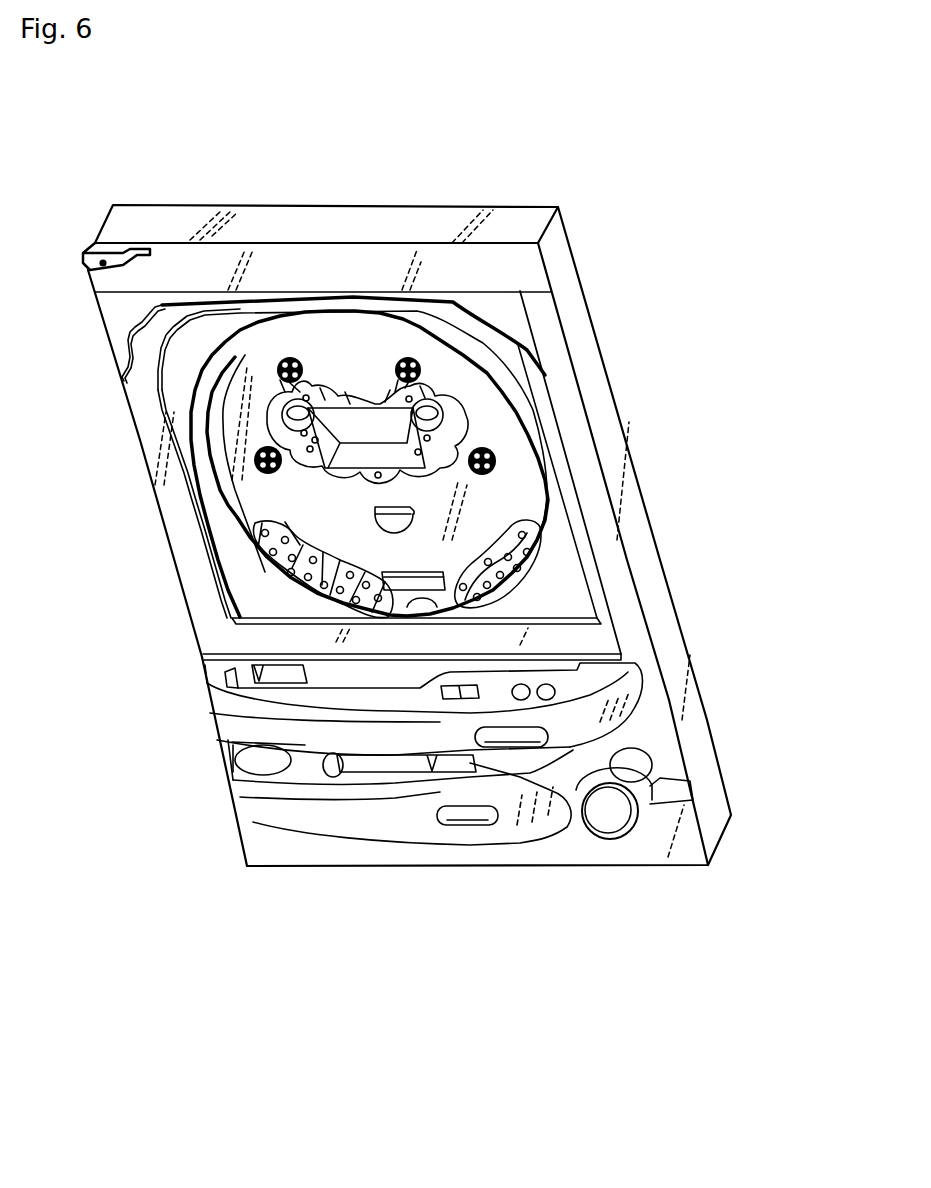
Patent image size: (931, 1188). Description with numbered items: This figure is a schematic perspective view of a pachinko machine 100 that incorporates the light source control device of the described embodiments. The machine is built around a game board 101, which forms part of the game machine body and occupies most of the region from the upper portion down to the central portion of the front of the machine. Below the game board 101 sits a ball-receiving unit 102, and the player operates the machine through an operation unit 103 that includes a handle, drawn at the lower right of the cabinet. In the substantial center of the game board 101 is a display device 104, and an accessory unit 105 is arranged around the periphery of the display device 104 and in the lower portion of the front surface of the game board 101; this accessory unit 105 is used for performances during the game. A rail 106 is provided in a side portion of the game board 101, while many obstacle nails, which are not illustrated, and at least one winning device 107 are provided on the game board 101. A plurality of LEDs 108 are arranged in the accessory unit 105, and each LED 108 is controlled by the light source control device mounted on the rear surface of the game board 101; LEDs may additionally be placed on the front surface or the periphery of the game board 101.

The pachinko machine 100 is at (690, 921).
The game board 101 is at (570, 600).
The ball-receiving unit 102 is at (372, 698).
The operation unit 103 is at (647, 788).
The display device 104 is at (455, 438).
The accessory unit 105 is at (450, 387).
The rail 106 is at (198, 400).
The winning device 107 is at (377, 517).
The LED 108 is at (309, 402).